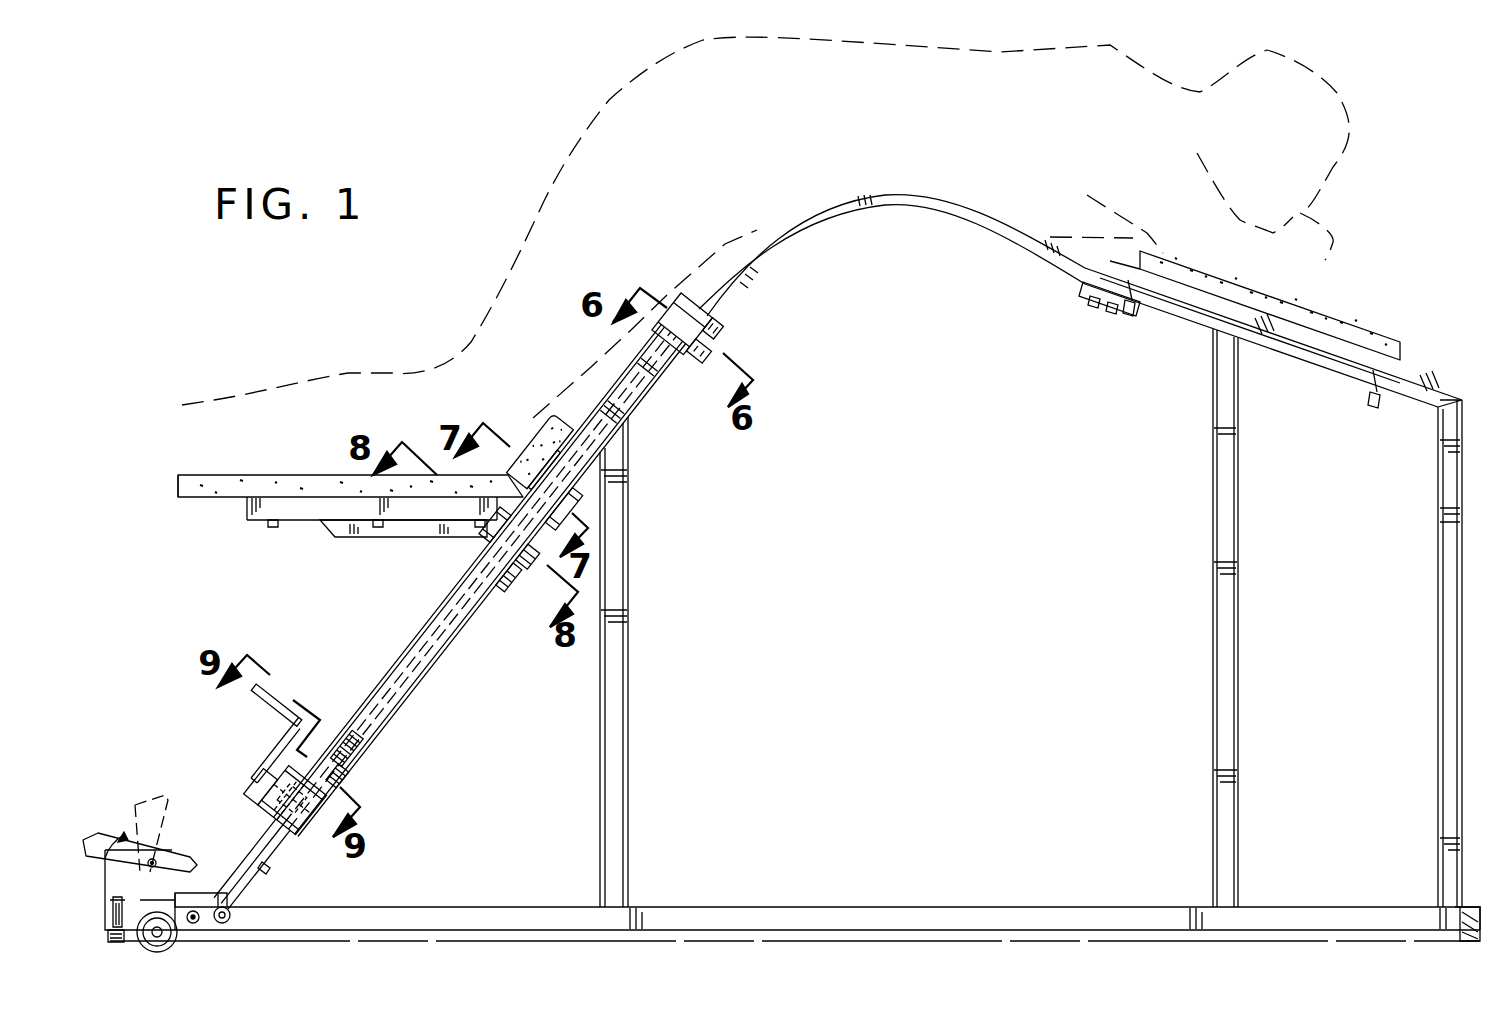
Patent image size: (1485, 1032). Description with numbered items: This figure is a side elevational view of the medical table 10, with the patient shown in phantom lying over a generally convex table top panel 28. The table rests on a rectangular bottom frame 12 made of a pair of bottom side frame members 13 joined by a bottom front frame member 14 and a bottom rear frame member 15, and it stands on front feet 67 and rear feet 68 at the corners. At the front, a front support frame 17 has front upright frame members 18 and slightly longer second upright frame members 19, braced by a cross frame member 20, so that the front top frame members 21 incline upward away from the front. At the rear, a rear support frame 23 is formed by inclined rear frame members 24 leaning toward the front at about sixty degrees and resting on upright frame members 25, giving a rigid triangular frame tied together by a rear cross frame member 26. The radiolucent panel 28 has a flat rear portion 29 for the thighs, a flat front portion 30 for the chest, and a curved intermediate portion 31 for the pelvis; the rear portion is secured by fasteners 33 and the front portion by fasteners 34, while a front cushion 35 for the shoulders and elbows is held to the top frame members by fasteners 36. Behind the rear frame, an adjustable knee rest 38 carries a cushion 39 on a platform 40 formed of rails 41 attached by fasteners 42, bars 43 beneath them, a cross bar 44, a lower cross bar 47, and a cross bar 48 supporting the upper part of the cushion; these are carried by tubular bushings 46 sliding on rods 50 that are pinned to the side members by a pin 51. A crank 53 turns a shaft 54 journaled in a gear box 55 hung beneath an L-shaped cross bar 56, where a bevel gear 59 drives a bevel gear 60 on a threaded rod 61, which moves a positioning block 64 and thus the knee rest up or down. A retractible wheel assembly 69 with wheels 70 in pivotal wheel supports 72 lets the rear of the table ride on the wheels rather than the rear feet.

The medical table 10 is at (1420, 357).
The bottom frame 12 is at (840, 905).
The bottom side frame members 13 is at (386, 905).
The bottom front frame member 14 is at (1476, 906).
The bottom rear frame member 15 is at (112, 895).
The front support frame 17 is at (1438, 560).
The front upright frame members 18 is at (1450, 636).
The second upright frame members 19 is at (1225, 630).
The cross frame member 20 is at (1450, 515).
The front top frame members 21 is at (1310, 355).
The rear support frame 23 is at (420, 637).
The inclined rear frame members 24 is at (648, 405).
The upright frame members 25 is at (615, 630).
The rear cross frame member 26 is at (722, 345).
The table top panel 28 is at (866, 192).
The rear portion 29 is at (742, 280).
The front portion 30 is at (1065, 262).
The curved intermediate portion 31 is at (889, 207).
The fasteners 33 is at (722, 326).
The fasteners 34 is at (1110, 310).
The front cushion 35 is at (1345, 330).
The fasteners 36 is at (1130, 316).
The knee rest 38 is at (178, 498).
The cushion 39 is at (230, 474).
The platform 40 is at (258, 507).
The rails 41 is at (302, 521).
The fasteners 42 is at (272, 528).
The bars 43 is at (397, 538).
The cross bar 44 is at (500, 532).
The tubular bushing 46 is at (565, 506).
The cross bar 47 is at (530, 565).
The cross bar 48 is at (530, 425).
The rod 50 is at (576, 445).
The pin 51 is at (186, 920).
The crank 53 is at (268, 708).
The shaft 54 is at (255, 790).
The gear box 55 is at (280, 834).
The L-shaped cross bar 56 is at (336, 775).
The bevel gear 59 is at (262, 803).
The bevel gear 60 is at (296, 830).
The threaded rod 61 is at (345, 748).
The positioning block 64 is at (511, 580).
The front feet 67 is at (1468, 932).
The rear feet 68 is at (110, 917).
The retractible wheel assembly 69 is at (104, 826).
The wheels 70 is at (147, 952).
The wheel support 72 is at (196, 893).